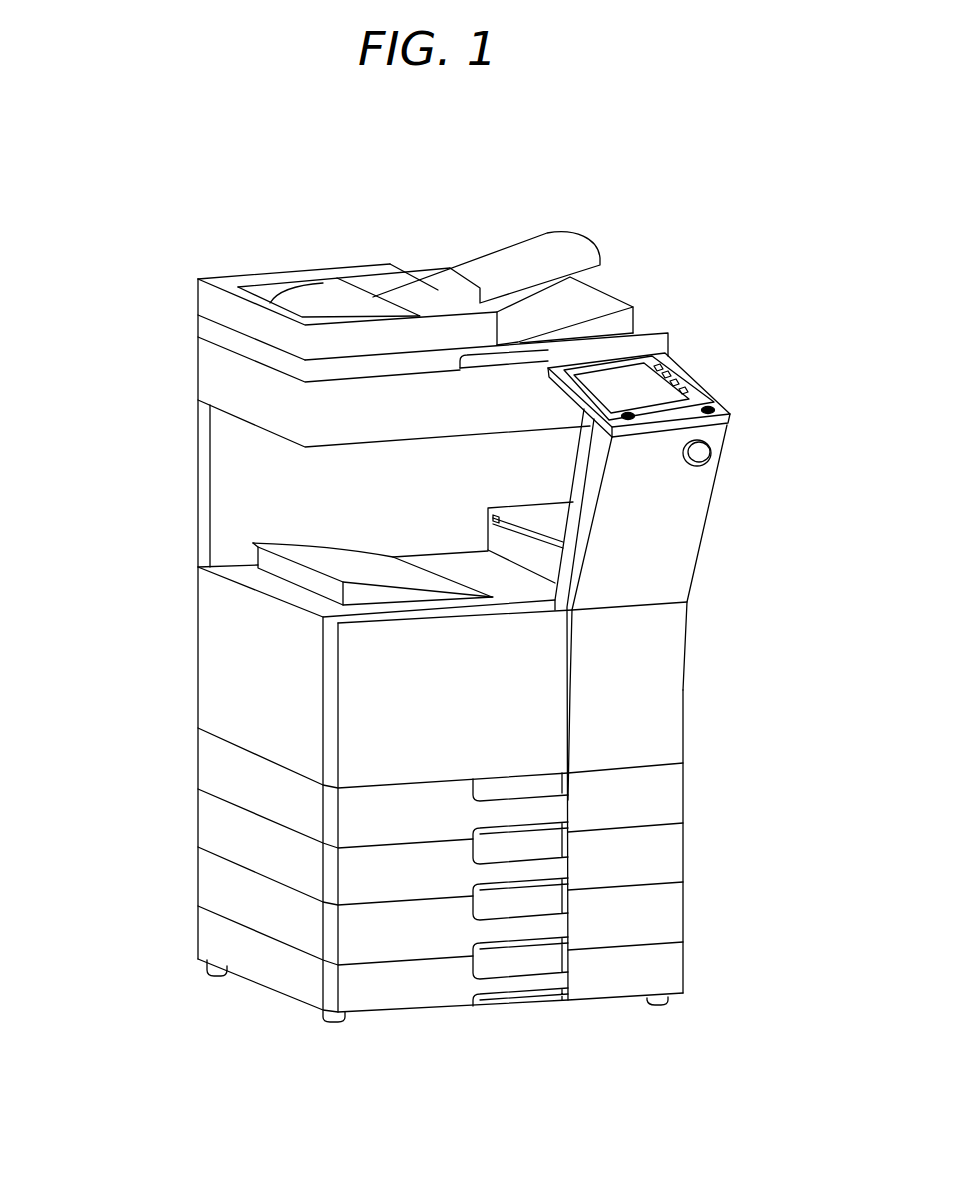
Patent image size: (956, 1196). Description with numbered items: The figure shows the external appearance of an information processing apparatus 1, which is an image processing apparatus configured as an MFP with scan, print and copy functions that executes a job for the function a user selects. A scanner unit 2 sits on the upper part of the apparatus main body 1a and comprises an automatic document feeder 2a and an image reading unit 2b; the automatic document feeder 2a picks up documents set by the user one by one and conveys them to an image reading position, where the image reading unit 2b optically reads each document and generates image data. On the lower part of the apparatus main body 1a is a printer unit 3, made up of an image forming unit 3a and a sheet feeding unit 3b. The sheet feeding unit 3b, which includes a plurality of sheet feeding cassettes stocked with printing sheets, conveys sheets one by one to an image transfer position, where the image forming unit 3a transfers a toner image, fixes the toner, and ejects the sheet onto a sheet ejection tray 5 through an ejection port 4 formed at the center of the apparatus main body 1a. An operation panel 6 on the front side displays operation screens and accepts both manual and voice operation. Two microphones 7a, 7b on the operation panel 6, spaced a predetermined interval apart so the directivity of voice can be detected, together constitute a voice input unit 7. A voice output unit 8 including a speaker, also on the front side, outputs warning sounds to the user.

The information processing apparatus 1 is at (237, 238).
The apparatus main body 1a is at (176, 507).
The scanner unit 2 is at (368, 339).
The automatic document feeder 2a is at (206, 303).
The image reading unit 2b is at (353, 392).
The printer unit 3 is at (377, 794).
The image forming unit 3a is at (208, 664).
The sheet feeding unit 3b is at (400, 856).
The ejection port 4 is at (490, 512).
The sheet ejection tray 5 is at (381, 570).
The operation panel 6 is at (647, 380).
The voice input unit 7 is at (726, 371).
The microphone 7a is at (633, 415).
The microphone 7b is at (713, 409).
The voice output unit 8 is at (703, 462).